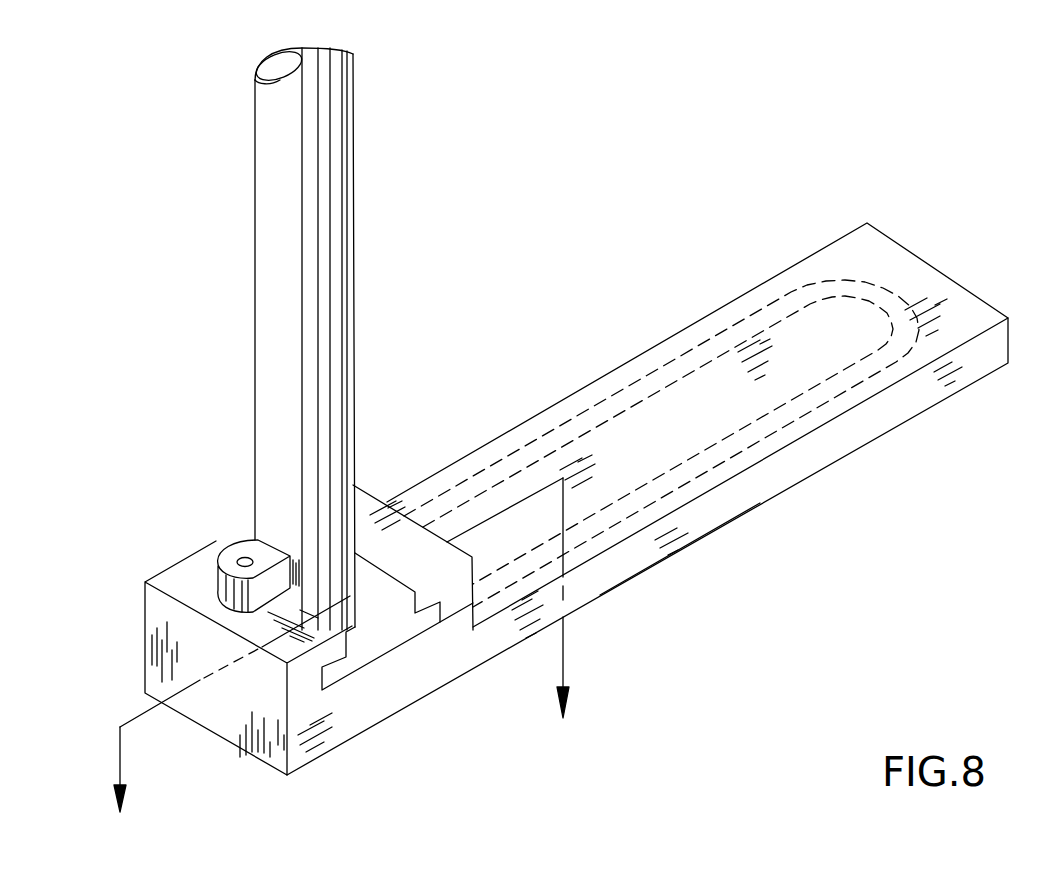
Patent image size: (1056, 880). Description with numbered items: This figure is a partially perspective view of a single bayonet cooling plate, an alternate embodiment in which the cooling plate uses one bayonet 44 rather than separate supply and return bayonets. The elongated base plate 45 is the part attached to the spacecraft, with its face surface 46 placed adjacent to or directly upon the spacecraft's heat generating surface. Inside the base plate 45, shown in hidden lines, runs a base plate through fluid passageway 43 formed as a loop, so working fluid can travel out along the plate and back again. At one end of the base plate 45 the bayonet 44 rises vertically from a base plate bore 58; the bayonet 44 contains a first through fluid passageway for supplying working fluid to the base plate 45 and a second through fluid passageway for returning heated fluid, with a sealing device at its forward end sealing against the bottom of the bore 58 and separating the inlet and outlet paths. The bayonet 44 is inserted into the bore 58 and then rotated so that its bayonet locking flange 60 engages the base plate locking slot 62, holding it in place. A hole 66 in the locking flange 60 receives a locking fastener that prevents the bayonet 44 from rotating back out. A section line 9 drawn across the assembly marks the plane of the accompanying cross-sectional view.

The section line 9 is at (340, 667).
The base plate through fluid passageway 43 is at (872, 382).
The bayonet 44 is at (354, 228).
The base plate 45 is at (825, 453).
The face surface 46 is at (740, 517).
The base plate bore 58 is at (347, 620).
The bayonet locking flange 60 is at (198, 580).
The base plate locking slot 62 is at (440, 616).
The hole 66 is at (245, 557).